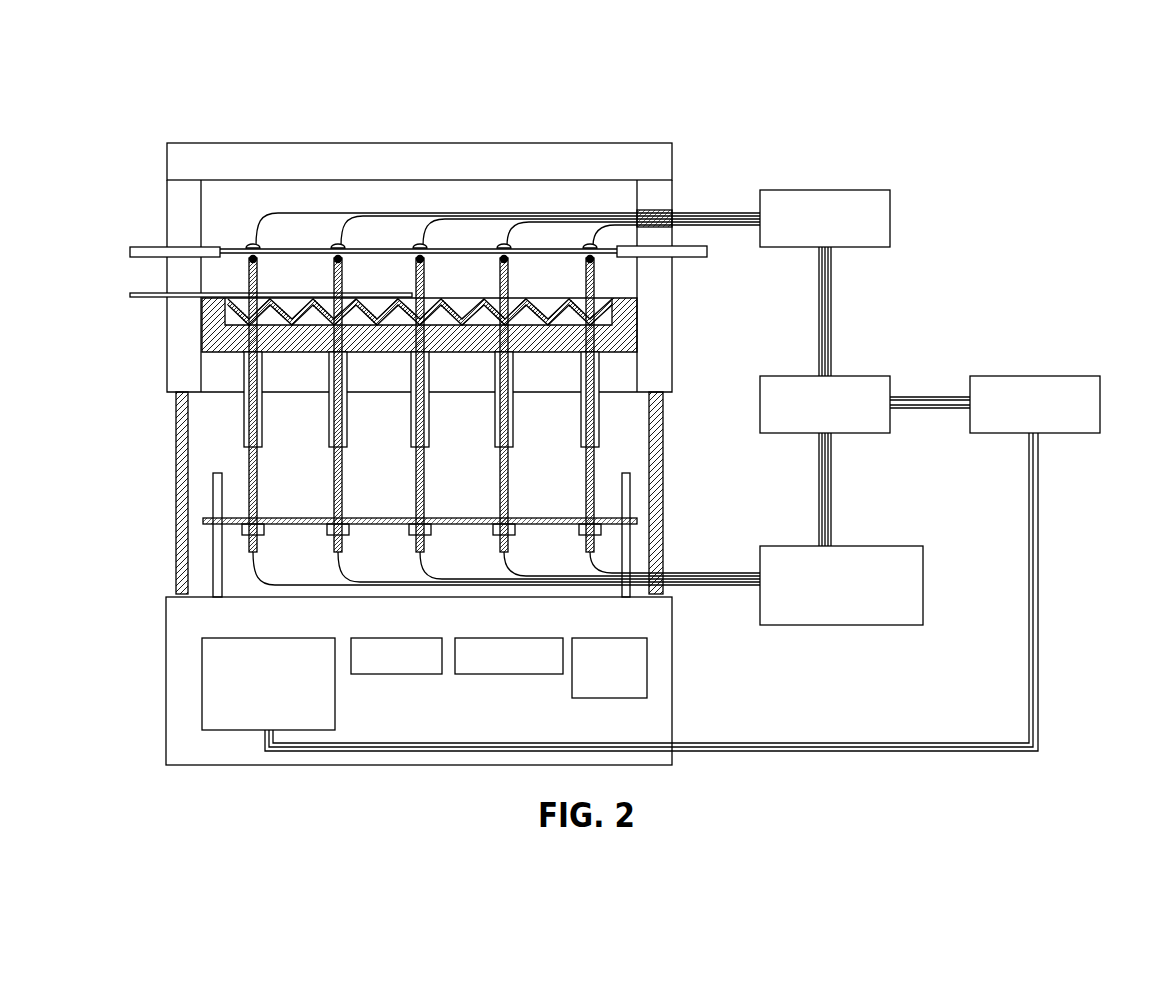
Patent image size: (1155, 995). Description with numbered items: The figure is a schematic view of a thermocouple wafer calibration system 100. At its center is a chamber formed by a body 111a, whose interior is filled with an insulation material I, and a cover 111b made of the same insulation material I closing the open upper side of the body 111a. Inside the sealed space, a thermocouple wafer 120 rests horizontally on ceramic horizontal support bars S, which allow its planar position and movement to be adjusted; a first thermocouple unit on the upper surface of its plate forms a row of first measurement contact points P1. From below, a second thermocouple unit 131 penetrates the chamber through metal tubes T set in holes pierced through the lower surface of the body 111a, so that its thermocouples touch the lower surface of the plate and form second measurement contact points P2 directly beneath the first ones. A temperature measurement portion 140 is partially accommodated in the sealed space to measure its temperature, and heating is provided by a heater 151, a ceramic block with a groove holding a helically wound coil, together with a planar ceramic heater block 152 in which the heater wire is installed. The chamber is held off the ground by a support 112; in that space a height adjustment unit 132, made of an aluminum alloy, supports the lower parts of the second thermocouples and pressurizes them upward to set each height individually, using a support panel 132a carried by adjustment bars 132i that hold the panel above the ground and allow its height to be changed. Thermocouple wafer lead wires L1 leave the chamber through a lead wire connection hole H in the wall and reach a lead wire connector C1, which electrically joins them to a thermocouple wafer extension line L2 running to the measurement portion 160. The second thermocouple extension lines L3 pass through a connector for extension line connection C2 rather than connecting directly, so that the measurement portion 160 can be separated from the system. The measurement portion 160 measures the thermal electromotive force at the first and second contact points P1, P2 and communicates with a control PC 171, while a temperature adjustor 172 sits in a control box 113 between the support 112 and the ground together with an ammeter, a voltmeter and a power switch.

The thermocouple wafer calibration system 100 is at (967, 93).
The cover 111b is at (167, 158).
The body 111a is at (167, 218).
The insulation material I is at (177, 192).
The lead wire connection hole H is at (660, 210).
The thermocouple wafer lead wire L1 is at (730, 213).
The horizontal support bar S is at (133, 252).
The thermocouple wafer 120 is at (463, 253).
The first measurement contact point P1 is at (417, 246).
The second measurement contact point P2 is at (593, 262).
The temperature measurement portion 140 is at (135, 295).
The heater 151 is at (202, 330).
The heater block 152 is at (625, 325).
The metal tube T is at (247, 407).
The second thermocouple unit 131 is at (595, 450).
The support 112 is at (178, 438).
The adjustment bar 132i is at (213, 483).
The height adjustment unit 132 is at (243, 532).
The support panel 132a is at (555, 520).
The second thermocouple extension line L3 is at (818, 515).
The control box 113 is at (166, 670).
The temperature adjustor 172 is at (202, 708).
The lead wire connector C1 is at (890, 215).
The thermocouple wafer extension line L2 is at (833, 276).
The measurement portion 160 is at (865, 376).
The control PC 171 is at (1063, 376).
The connector for extension line connection C2 is at (923, 584).